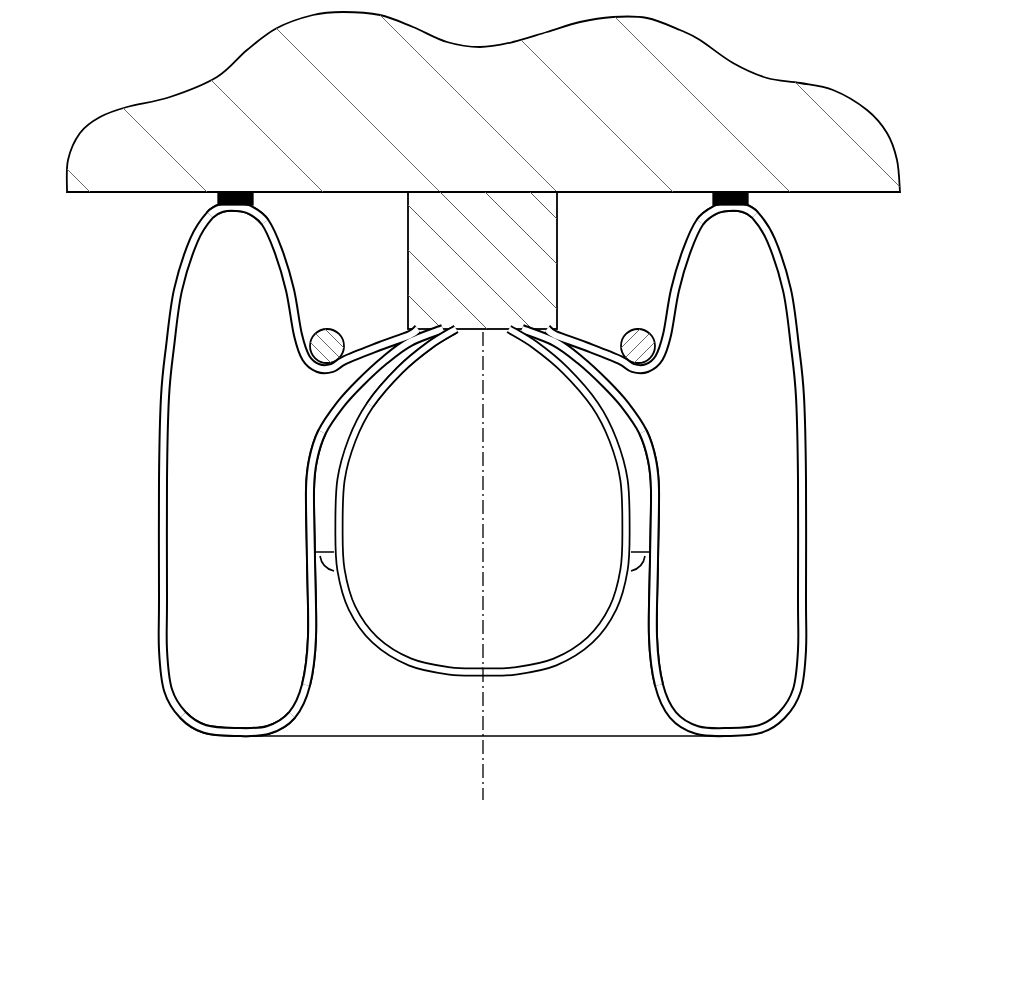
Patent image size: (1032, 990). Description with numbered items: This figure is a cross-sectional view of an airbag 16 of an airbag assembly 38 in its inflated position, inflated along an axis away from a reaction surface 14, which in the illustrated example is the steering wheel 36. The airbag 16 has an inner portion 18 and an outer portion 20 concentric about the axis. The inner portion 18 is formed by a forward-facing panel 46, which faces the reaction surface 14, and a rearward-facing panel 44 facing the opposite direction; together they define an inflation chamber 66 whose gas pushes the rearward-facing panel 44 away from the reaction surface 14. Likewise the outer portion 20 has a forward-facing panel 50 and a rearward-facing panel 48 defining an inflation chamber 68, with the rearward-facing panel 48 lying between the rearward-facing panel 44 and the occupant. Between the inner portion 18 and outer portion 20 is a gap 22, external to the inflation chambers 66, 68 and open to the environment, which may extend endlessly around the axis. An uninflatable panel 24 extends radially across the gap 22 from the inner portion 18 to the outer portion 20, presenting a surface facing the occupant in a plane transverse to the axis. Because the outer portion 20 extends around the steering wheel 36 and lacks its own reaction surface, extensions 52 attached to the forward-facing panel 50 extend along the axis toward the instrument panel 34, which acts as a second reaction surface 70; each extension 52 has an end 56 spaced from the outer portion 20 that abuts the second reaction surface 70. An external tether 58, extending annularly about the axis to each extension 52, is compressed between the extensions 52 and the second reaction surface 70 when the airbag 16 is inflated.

The reaction surface 14 is at (473, 331).
The airbag 16 is at (469, 564).
The inner portion 18 is at (482, 517).
The outer portion 20 is at (469, 511).
The gap 22 is at (325, 522).
The panel 24 is at (337, 571).
The instrument panel 34 is at (452, 135).
The steering wheel 36 is at (473, 331).
The airbag assembly 38 is at (427, 469).
The rearward-facing panel of the inner portion 44 is at (404, 667).
The forward-facing panel of the inner portion 46 is at (416, 353).
The rearward-facing panel of the outer portion 48 is at (237, 738).
The forward-facing panel of the outer portion 50 is at (321, 373).
The extensions 52 is at (442, 469).
The end of the extension 56 is at (236, 207).
The external tether 58 is at (218, 199).
The inflation chamber of the inner portion 66 is at (482, 517).
The inflation chamber of the outer portion 68 is at (222, 490).
The second reaction surface 70 is at (72, 198).